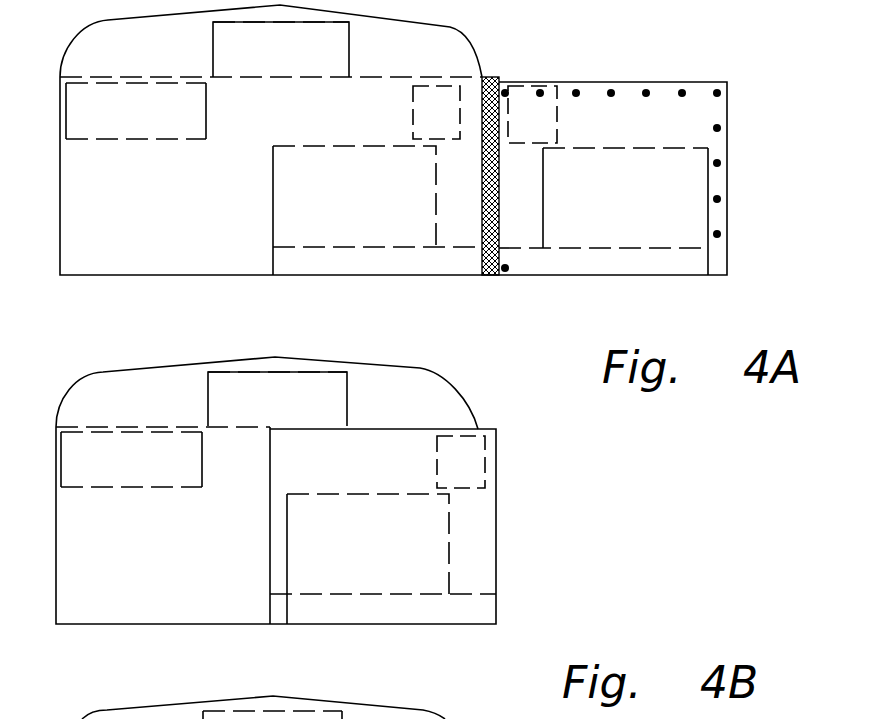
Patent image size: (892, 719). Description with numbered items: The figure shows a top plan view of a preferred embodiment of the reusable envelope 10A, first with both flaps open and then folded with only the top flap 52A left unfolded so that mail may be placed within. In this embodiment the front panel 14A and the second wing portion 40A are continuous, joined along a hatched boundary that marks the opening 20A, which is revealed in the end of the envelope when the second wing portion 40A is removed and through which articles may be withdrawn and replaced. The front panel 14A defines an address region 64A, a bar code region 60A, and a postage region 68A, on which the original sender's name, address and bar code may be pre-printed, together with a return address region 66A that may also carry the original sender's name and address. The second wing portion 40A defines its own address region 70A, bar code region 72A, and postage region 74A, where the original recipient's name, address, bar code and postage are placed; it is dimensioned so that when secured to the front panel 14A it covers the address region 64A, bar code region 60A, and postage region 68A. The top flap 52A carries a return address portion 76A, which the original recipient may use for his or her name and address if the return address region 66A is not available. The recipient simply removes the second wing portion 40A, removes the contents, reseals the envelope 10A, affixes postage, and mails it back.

In FIG. 4A, the reusable envelope 10A is at (613, 43).
In FIG. 4B, the reusable envelope 10A is at (603, 492).
In FIG. 4A, the front panel 14A is at (129, 224).
In FIG. 4B, the front panel 14A is at (113, 568).
In FIG. 4A, the opening 20A is at (493, 268).
In FIG. 4A, the second wing portion 40A is at (611, 124).
In FIG. 4B, the second wing portion 40A is at (328, 478).
In FIG. 4A, the top flap 52A is at (383, 67).
In FIG. 4B, the top flap 52A is at (383, 416).
In FIG. 4A, the bar code region 60A is at (356, 269).
In FIG. 4A, the address region 64A is at (329, 204).
In FIG. 4A, the return address region 66A is at (129, 122).
In FIG. 4B, the return address region 66A is at (99, 484).
In FIG. 4A, the postage region 68A is at (423, 122).
In FIG. 4A, the address region 70A is at (609, 203).
In FIG. 4B, the address region 70A is at (354, 559).
In FIG. 4A, the bar code region 72A is at (583, 270).
In FIG. 4B, the bar code region 72A is at (381, 619).
In FIG. 4A, the postage region 74A is at (516, 122).
In FIG. 4B, the postage region 74A is at (448, 478).
In FIG. 4A, the return address portion 76A is at (276, 68).
In FIG. 4B, the return address portion 76A is at (261, 416).